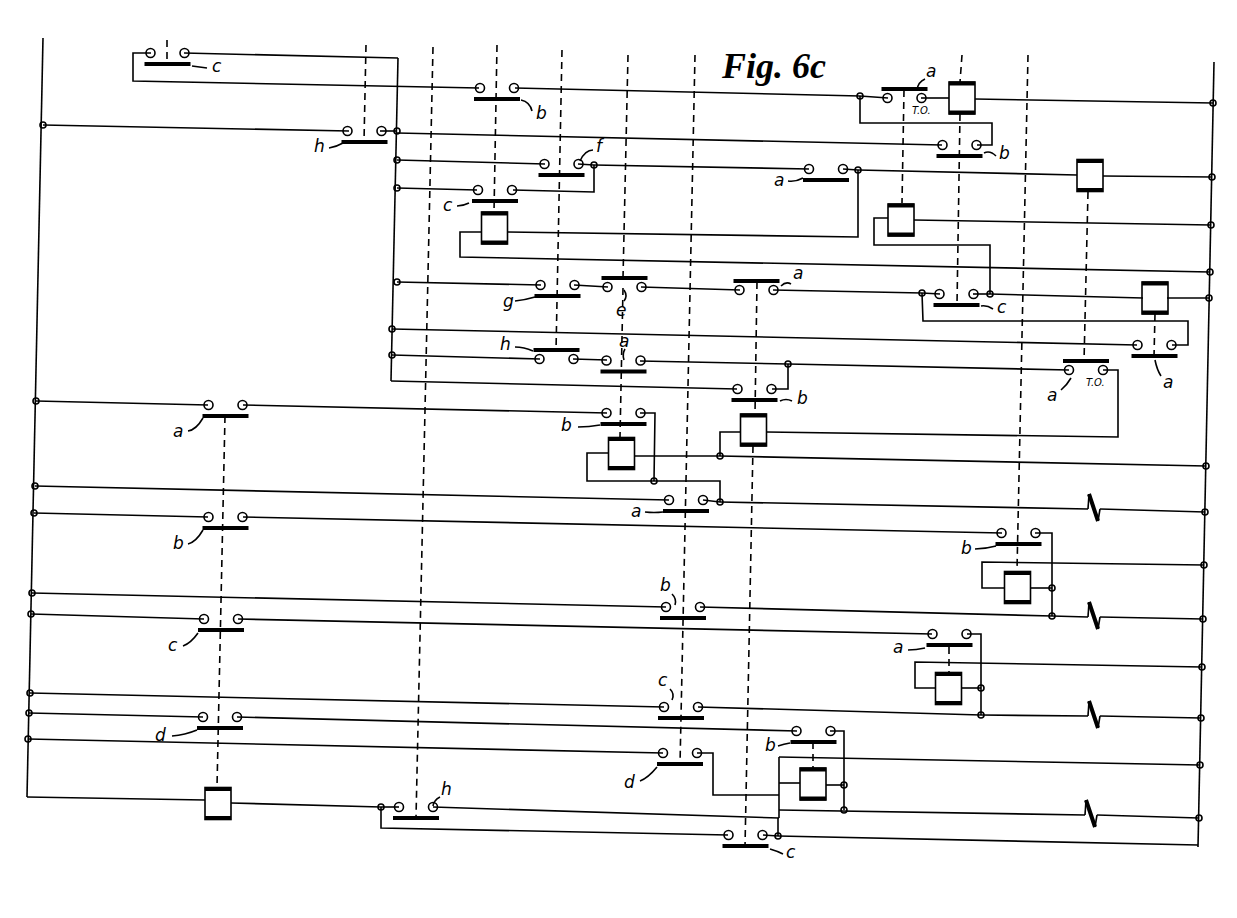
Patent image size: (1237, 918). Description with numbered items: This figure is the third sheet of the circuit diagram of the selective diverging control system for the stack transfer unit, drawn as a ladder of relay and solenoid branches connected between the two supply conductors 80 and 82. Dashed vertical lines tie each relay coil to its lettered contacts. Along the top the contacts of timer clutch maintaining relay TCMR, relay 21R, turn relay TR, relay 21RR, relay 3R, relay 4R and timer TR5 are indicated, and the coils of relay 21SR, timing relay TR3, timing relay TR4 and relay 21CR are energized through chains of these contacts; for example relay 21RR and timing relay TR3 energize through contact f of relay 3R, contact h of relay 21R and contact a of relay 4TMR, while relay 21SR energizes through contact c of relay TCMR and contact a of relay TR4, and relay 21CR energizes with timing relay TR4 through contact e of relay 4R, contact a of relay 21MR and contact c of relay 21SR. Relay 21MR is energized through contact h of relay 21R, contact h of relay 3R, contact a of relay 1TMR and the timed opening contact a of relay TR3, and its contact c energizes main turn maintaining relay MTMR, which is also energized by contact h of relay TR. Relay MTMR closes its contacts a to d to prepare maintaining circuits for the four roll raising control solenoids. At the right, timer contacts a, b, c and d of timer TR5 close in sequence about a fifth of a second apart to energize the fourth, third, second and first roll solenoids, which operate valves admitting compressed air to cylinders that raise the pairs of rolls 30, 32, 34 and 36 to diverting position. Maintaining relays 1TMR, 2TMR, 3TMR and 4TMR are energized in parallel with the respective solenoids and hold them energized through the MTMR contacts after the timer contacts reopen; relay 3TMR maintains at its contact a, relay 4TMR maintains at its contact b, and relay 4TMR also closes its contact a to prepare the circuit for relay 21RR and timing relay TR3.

The conductor 80 is at (45, 236).
The conductor 82 is at (1208, 426).
The pair of rolls 30 is at (962, 515).
The pair of rolls 32 is at (1127, 618).
The pair of rolls 34 is at (1091, 713).
The pair of rolls 36 is at (989, 817).
The timer clutch maintaining relay TCMR is at (163, 44).
The relay 21R is at (364, 47).
The turn relay TR is at (431, 57).
The relay 21RR is at (496, 60).
The relay 3R is at (561, 62).
The relay 4R is at (627, 67).
The timer TR5 is at (694, 67).
The relay 21SR is at (974, 80).
The second turn maintaining relay 2TMR is at (1030, 60).
The timing relay TR3 is at (1104, 166).
The timing relay TR4 is at (911, 208).
The relay 21CR is at (1142, 292).
The relay 21MR is at (741, 421).
The first turn maintaining relay 1TMR is at (607, 450).
The third turn maintaining relay 3TMR is at (934, 695).
The fourth turn maintaining relay 4TMR is at (828, 779).
The main turn maintaining relay MTMR is at (233, 795).